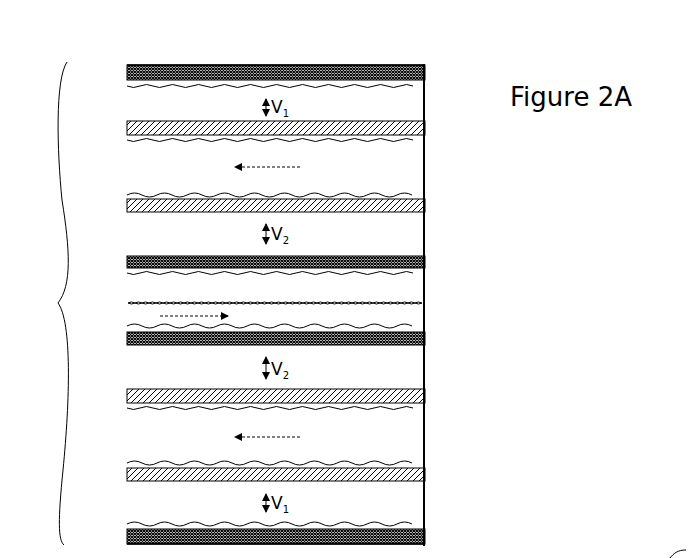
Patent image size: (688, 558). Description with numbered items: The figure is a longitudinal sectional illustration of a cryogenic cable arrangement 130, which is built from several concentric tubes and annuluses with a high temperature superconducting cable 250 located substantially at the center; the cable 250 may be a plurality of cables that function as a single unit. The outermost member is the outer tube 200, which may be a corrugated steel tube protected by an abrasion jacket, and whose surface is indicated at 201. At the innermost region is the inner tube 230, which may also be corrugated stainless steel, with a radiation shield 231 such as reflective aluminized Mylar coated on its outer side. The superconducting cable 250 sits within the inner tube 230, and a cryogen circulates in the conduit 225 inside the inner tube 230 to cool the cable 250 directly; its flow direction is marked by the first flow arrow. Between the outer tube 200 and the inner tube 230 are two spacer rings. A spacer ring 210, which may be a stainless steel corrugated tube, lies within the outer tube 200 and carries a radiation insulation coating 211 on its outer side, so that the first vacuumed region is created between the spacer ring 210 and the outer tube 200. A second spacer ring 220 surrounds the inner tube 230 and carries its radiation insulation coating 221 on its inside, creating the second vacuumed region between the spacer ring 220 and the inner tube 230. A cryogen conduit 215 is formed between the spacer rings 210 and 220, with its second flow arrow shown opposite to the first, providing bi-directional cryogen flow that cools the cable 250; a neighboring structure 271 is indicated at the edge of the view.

The cryogenic cable arrangement 130 is at (58, 303).
The outer tube 200 is at (420, 89).
The outer surface of substrate 201 is at (413, 66).
The spacer ring 210 is at (420, 142).
The radiation insulation coating 211 is at (421, 122).
The cryogen conduit 215 is at (378, 165).
The spacer ring 220 is at (424, 193).
The radiation insulation coating 221 is at (424, 209).
The cryogen conduit 225 is at (146, 286).
The inner tube 230 is at (424, 275).
The radiation shield 231 is at (424, 259).
The high temperature superconducting cable 250 is at (130, 303).
The adjacent structure 271 is at (512, 557).